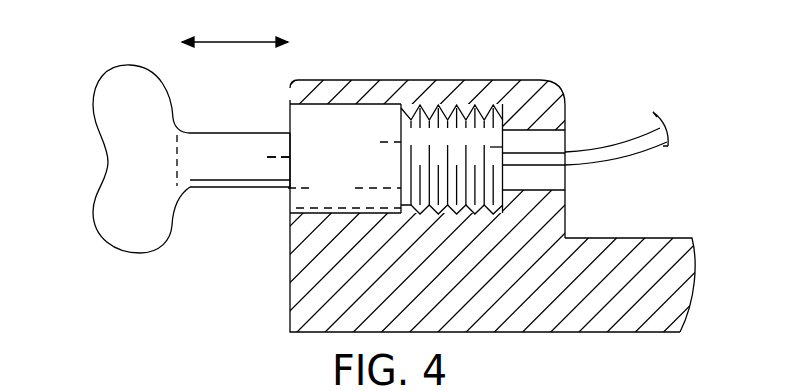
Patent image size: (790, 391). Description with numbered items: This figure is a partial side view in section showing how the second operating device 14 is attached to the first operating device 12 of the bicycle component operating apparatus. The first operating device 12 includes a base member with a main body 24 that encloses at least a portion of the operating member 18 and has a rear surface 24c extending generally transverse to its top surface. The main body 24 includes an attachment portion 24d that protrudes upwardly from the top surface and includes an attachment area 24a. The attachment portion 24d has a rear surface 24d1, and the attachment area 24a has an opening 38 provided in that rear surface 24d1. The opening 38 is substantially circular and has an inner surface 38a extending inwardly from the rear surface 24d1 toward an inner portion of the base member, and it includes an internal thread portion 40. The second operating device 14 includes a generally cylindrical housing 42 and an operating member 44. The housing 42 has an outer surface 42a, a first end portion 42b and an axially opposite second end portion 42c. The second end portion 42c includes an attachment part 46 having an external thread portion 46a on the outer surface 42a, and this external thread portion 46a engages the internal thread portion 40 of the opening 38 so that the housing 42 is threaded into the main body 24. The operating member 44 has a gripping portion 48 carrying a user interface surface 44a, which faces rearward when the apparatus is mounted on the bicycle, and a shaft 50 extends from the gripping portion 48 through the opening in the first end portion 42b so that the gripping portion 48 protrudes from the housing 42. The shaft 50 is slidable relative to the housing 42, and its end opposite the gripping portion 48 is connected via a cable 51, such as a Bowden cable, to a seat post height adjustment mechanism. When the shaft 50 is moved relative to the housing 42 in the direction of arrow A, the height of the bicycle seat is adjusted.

The first operating device 12 is at (626, 347).
The second operating device 14 is at (257, 134).
The operating member 18 is at (745, 11).
The main body 24 is at (605, 238).
The attachment area 24a is at (290, 310).
The rear surface 24c is at (290, 278).
The attachment portion 24d is at (543, 80).
The rear surface 24d1 is at (290, 322).
The opening 38 is at (287, 102).
The inner surface 38a is at (445, 108).
The internal thread portion 40 is at (480, 107).
The housing 42 is at (362, 102).
The outer surface 42a is at (340, 197).
The first end portion 42b is at (290, 198).
The second end portion 42c is at (490, 147).
The operating member 44 is at (172, 90).
The user interface surface 44a is at (107, 143).
The attachment part 46 is at (488, 177).
The external thread portion 46a is at (492, 160).
The gripping portion 48 is at (115, 252).
The shaft 50 is at (221, 190).
The cable 51 is at (632, 153).
The arrow A is at (234, 42).